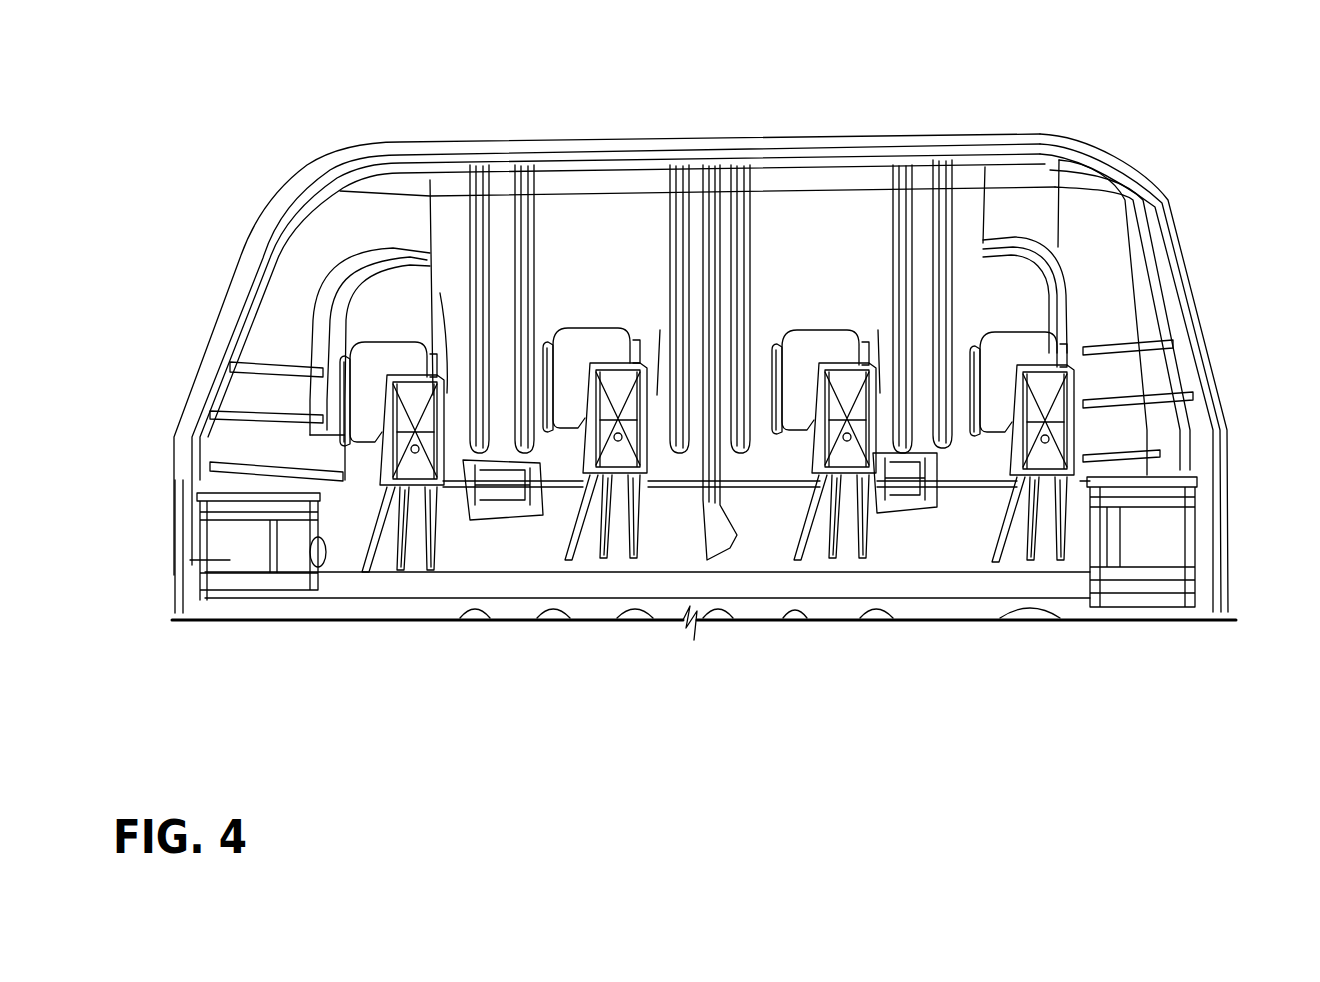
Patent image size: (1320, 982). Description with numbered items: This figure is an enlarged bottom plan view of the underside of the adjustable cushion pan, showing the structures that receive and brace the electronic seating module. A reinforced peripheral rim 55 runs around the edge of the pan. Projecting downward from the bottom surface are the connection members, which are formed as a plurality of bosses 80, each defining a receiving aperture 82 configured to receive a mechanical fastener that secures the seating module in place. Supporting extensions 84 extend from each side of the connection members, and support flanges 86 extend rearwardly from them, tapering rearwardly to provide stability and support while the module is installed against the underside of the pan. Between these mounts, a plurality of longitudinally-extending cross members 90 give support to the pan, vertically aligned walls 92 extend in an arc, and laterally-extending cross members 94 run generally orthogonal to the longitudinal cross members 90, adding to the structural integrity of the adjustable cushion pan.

The reinforced peripheral rim 55 is at (1060, 263).
The boss 80 is at (395, 505).
The receiving aperture 82 is at (445, 492).
The supporting extension 84 is at (447, 393).
The support flange 86 is at (363, 497).
The longitudinally-extending cross member 90 is at (507, 177).
The vertically aligned wall 92 is at (348, 300).
The laterally-extending cross member 94 is at (228, 402).